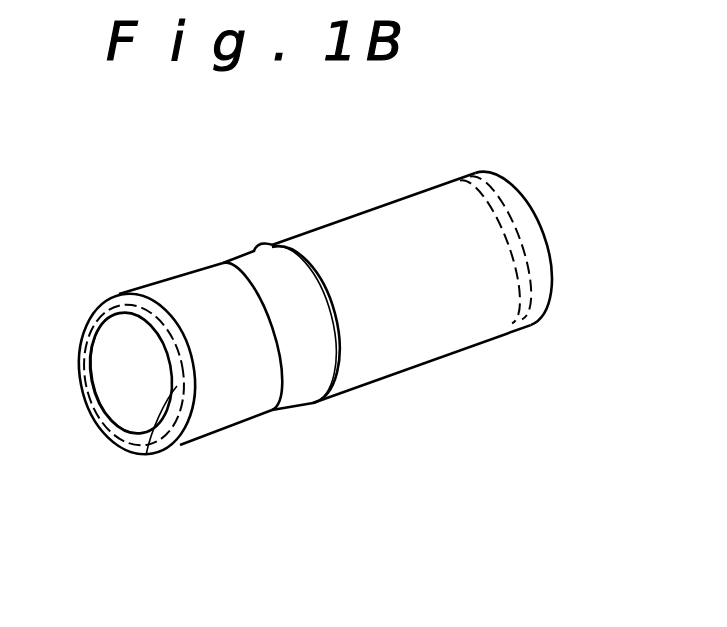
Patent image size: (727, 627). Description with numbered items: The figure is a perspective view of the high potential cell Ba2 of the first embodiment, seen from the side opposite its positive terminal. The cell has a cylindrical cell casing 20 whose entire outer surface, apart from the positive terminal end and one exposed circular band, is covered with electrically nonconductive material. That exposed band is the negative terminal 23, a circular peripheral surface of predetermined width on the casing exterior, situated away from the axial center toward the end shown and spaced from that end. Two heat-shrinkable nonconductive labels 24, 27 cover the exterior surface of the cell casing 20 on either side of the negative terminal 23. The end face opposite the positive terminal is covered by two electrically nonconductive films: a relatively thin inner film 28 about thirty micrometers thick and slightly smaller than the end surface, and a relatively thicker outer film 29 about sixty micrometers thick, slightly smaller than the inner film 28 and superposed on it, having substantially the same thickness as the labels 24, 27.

The high potential cell Ba2 is at (368, 209).
The cell casing 20 is at (413, 303).
The negative terminal 23 is at (302, 372).
The heat-shrinkable nonconductive label 24 is at (482, 298).
The heat-shrinkable nonconductive label 27 is at (232, 387).
The inner film 28 is at (146, 455).
The outer film 29 is at (126, 372).